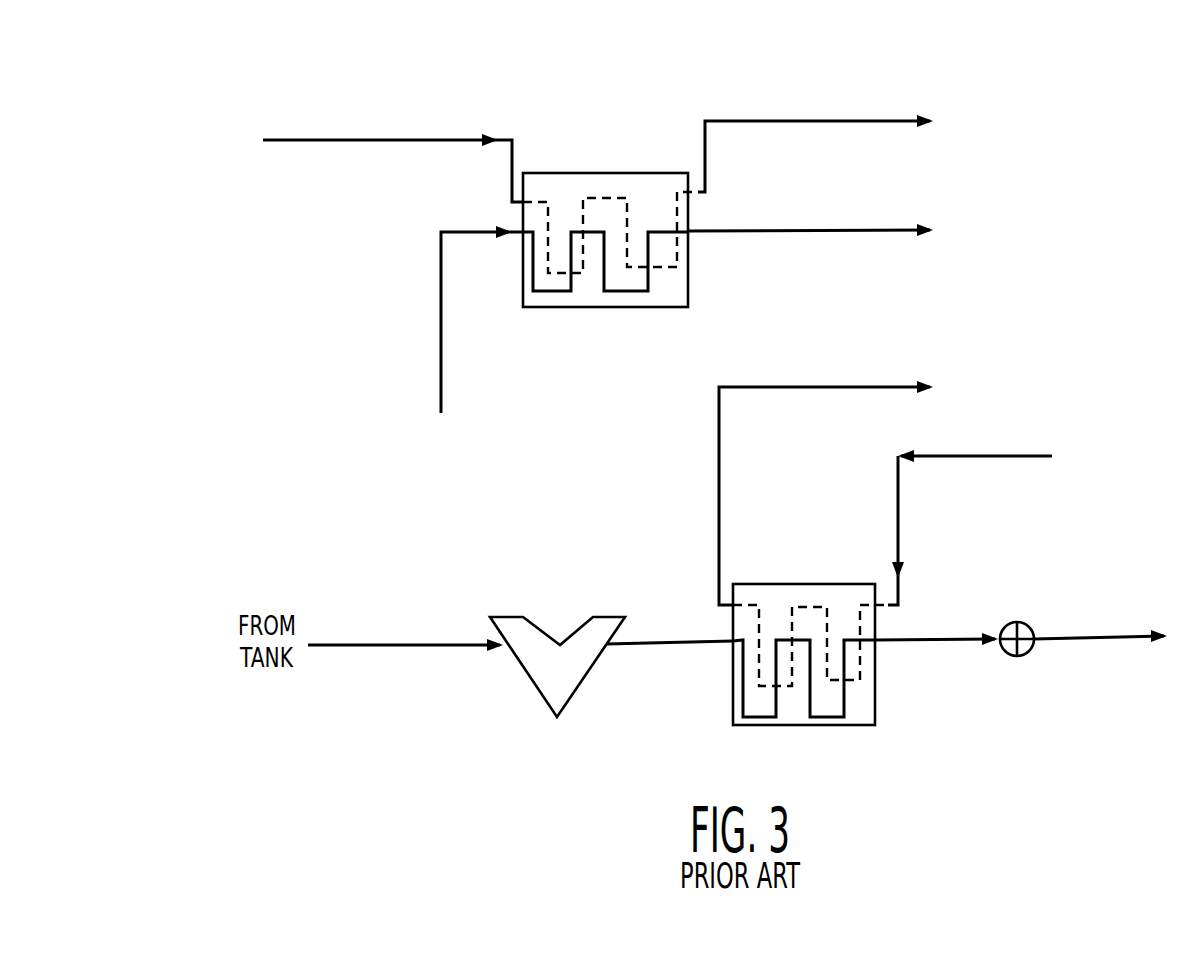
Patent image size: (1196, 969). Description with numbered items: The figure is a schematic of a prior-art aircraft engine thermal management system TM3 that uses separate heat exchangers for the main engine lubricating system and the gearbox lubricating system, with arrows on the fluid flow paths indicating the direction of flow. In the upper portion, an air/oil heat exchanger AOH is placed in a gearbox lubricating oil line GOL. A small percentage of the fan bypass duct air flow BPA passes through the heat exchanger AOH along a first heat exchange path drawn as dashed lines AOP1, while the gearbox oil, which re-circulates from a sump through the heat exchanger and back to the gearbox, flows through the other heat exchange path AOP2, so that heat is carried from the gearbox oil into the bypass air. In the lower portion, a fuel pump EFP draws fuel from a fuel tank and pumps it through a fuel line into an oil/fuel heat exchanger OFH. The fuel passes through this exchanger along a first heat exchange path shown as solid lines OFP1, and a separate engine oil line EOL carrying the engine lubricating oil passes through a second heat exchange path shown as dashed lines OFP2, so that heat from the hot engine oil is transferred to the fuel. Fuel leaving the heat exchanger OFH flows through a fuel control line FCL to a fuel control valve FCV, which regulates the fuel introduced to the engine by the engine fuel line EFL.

The thermal management system TM3 is at (1072, 188).
The fan bypass duct air flow BPA is at (380, 140).
The gearbox lubricating oil line GOL is at (441, 327).
The air/oil heat exchanger AOH is at (653, 173).
The first heat exchange path AOP1 is at (541, 198).
The second heat exchange path AOP2 is at (633, 292).
The engine oil line EOL is at (835, 386).
The oil/fuel heat exchanger OFH is at (863, 708).
The first heat exchange path OFP1 is at (807, 712).
The second heat exchange path OFP2 is at (800, 600).
The fuel pump EFP is at (547, 678).
The fuel control line FCL is at (945, 633).
The fuel control valve FCV is at (1028, 654).
The engine fuel line EFL is at (1087, 635).